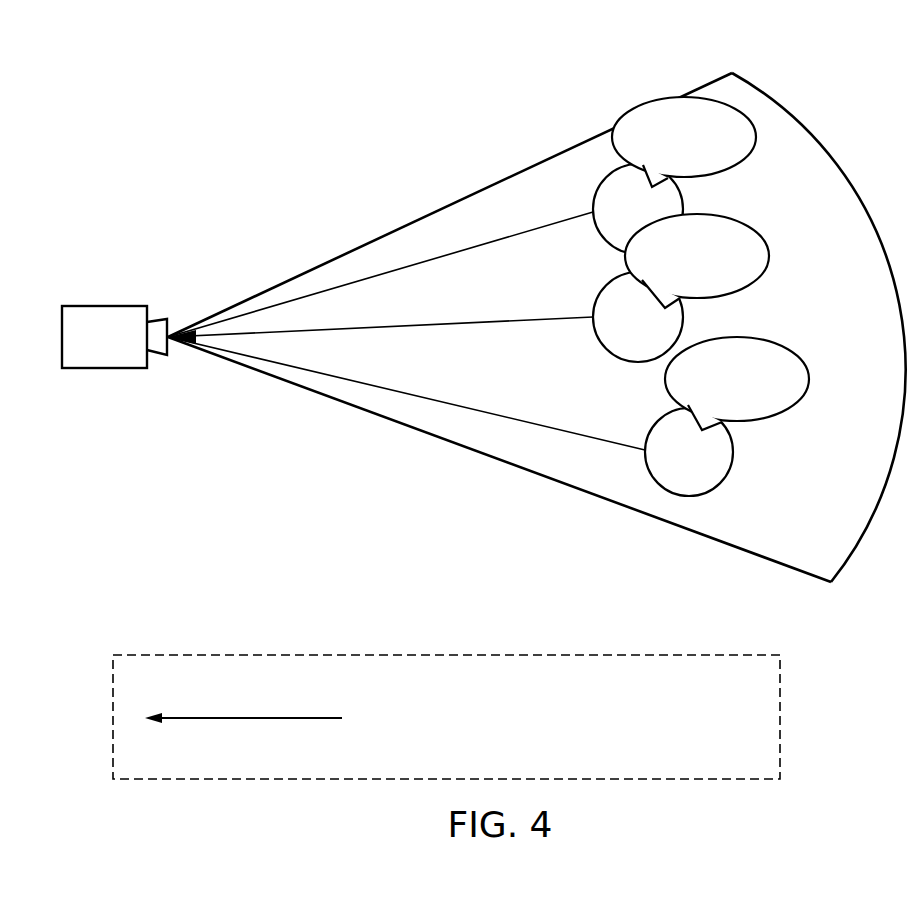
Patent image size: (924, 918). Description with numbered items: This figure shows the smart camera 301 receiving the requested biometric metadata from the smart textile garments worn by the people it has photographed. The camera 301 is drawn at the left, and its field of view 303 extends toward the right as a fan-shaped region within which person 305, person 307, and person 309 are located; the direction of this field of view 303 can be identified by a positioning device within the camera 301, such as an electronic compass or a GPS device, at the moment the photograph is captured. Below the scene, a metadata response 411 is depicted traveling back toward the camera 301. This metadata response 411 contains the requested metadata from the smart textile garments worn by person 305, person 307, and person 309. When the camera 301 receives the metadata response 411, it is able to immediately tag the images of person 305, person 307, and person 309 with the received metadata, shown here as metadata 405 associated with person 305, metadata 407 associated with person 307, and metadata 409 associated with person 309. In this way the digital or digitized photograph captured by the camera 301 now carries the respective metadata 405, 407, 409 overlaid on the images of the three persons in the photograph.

The camera 301 is at (114, 348).
The field of view 303 is at (537, 327).
The person 305 is at (638, 209).
The person 307 is at (638, 317).
The person 309 is at (689, 452).
The metadata 405 is at (747, 160).
The metadata 407 is at (769, 258).
The metadata 409 is at (808, 380).
The metadata response 411 is at (446, 717).